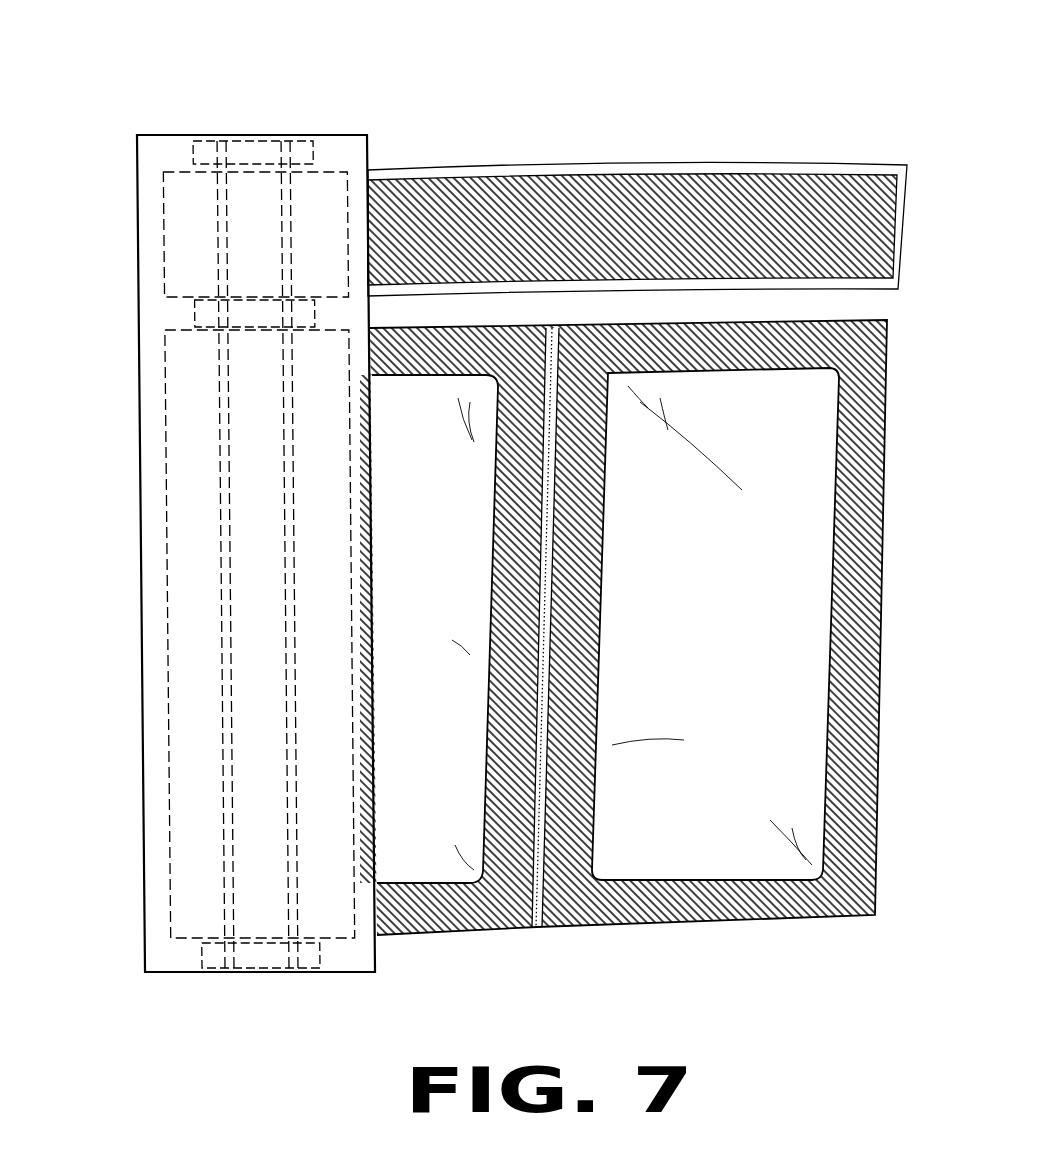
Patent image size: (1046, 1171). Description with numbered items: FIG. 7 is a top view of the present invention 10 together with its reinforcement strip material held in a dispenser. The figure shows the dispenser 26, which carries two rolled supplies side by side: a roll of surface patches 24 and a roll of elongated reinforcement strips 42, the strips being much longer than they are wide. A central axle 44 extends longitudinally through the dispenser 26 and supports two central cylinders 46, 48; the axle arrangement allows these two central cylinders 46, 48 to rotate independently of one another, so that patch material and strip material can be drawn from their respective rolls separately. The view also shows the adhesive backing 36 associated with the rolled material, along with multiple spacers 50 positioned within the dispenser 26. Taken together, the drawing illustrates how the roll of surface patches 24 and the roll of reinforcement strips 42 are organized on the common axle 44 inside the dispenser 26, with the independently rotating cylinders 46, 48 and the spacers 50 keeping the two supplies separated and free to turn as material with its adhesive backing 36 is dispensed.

The present invention 10 is at (479, 548).
The roll of surface patches 24 is at (713, 928).
The dispenser 26 is at (214, 548).
The adhesive backing 36 is at (525, 335).
The roll of elongated reinforcement strips 42 is at (562, 168).
The central axle 44 is at (227, 768).
The central cylinder 46 is at (172, 973).
The central cylinder 48 is at (217, 245).
The spacers 50 is at (262, 146).